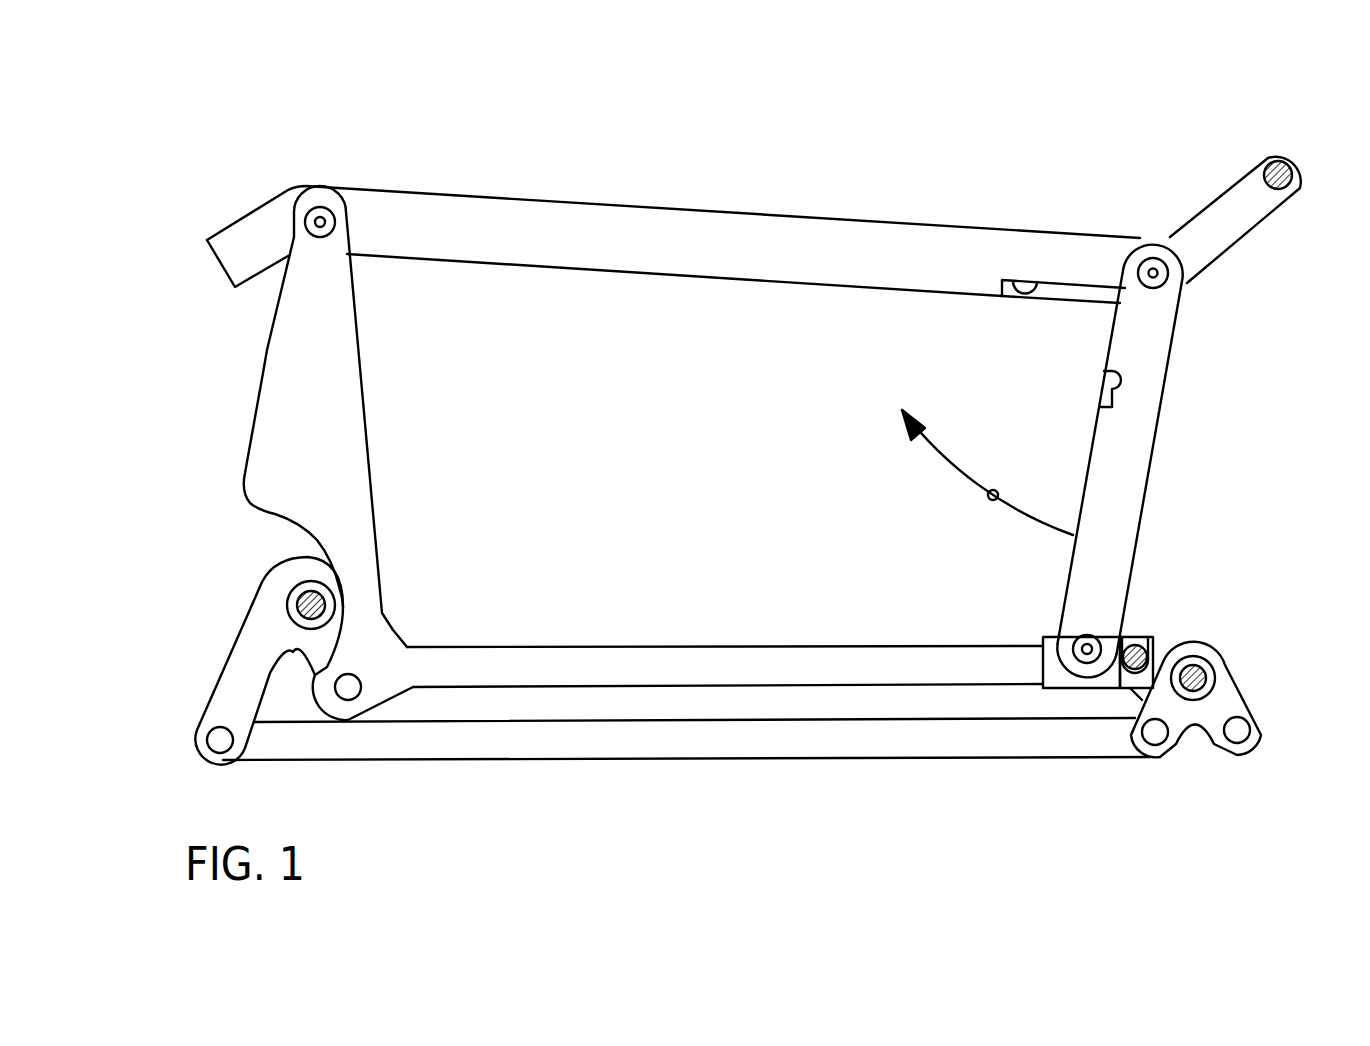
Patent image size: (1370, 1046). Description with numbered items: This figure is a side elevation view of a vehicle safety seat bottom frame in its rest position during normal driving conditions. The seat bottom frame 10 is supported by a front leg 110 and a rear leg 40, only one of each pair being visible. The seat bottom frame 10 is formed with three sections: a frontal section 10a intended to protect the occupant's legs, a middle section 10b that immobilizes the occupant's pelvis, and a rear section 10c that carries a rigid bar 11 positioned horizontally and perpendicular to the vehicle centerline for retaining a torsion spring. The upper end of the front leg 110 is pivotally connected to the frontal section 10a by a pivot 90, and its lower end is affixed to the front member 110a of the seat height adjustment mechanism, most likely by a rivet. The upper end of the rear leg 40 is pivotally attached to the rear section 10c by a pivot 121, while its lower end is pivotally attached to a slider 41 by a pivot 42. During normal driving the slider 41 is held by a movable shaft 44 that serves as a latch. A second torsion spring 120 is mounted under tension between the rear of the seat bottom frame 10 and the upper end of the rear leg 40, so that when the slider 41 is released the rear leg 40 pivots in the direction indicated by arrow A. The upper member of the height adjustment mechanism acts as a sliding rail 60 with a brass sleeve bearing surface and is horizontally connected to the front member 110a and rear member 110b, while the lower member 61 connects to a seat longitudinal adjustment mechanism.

The seat bottom frame 10 is at (735, 262).
The frontal section 10a is at (267, 230).
The middle section 10b is at (813, 215).
The rear section 10c is at (1230, 215).
The rigid bar 11 is at (1285, 163).
The rear leg 40 is at (1135, 510).
The slider 41 is at (1052, 663).
The pivot 42 is at (1087, 655).
The movable shaft 44 is at (1138, 643).
The sliding rail 60 is at (773, 667).
The lower member 61 is at (777, 743).
The pivot 90 is at (320, 222).
The front leg 110 is at (340, 447).
The front member 110a is at (252, 673).
The rear member 110b is at (1222, 700).
The second torsion spring 120 is at (1068, 292).
The pivot 121 is at (1167, 280).
The arrow A is at (990, 500).